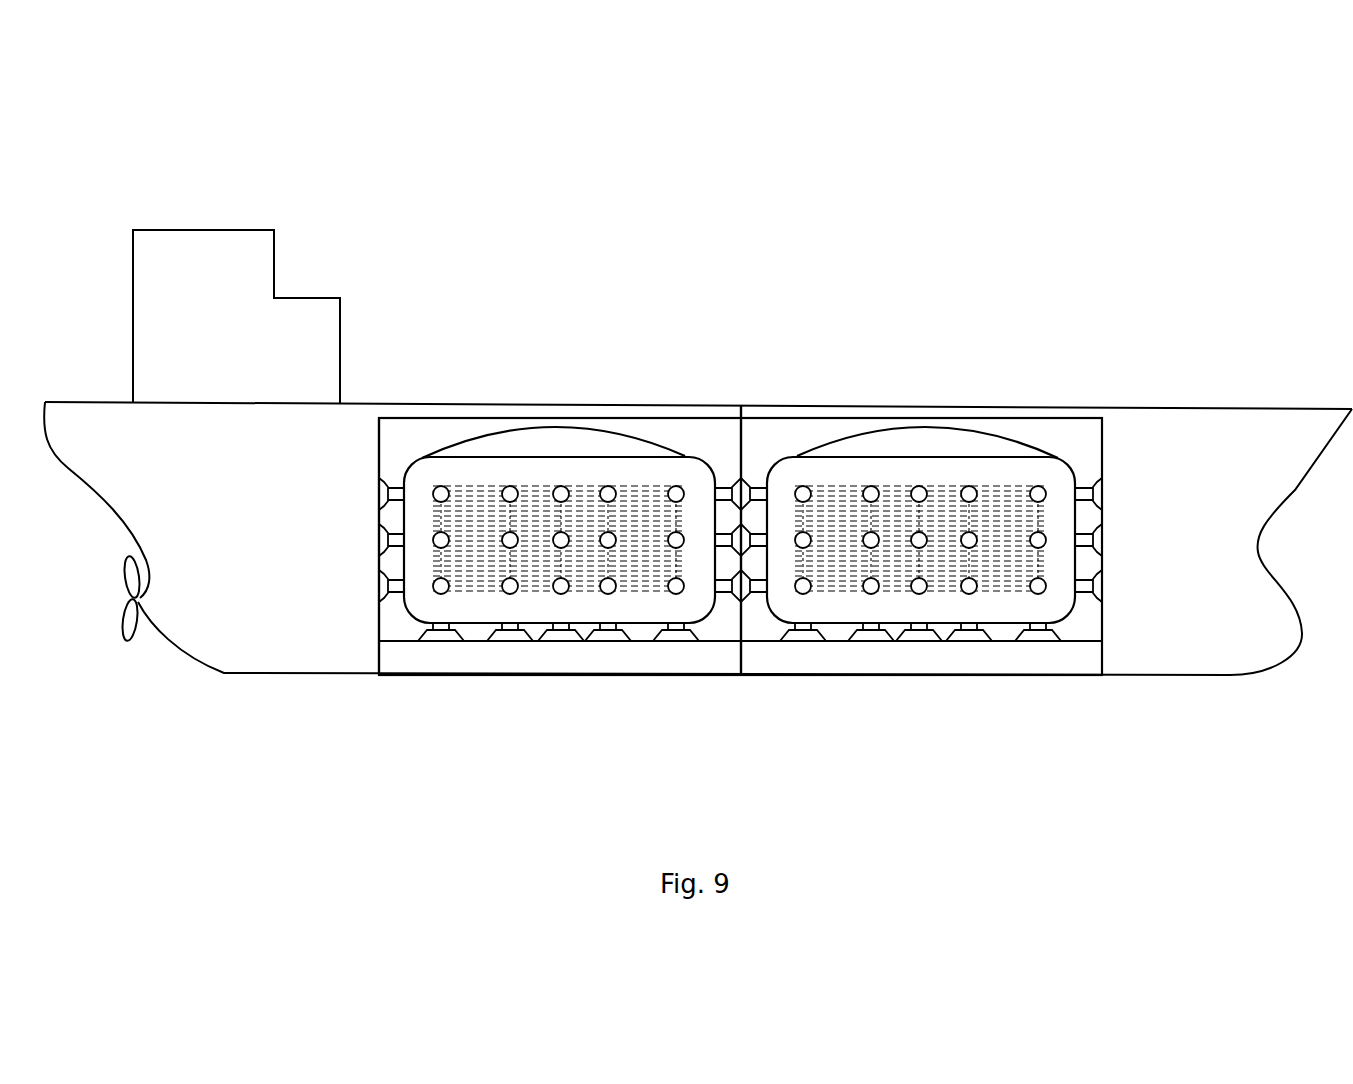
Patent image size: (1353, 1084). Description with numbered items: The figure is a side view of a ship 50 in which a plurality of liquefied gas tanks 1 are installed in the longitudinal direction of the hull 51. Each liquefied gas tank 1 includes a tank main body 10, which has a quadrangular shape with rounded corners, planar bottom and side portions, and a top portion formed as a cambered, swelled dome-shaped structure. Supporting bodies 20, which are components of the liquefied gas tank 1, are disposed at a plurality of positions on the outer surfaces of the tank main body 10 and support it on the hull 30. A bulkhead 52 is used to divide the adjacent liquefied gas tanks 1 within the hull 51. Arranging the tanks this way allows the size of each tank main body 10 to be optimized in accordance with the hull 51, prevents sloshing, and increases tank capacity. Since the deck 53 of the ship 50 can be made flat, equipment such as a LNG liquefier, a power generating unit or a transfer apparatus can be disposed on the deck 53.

The ship 50 is at (417, 217).
The hull 30 is at (740, 546).
The hull 51 is at (377, 617).
The bulkhead 52 is at (740, 620).
The deck 53 is at (738, 404).
The liquefied gas tank 1 is at (759, 450).
The tank main body 10 is at (422, 460).
The supporting body 20 is at (722, 486).